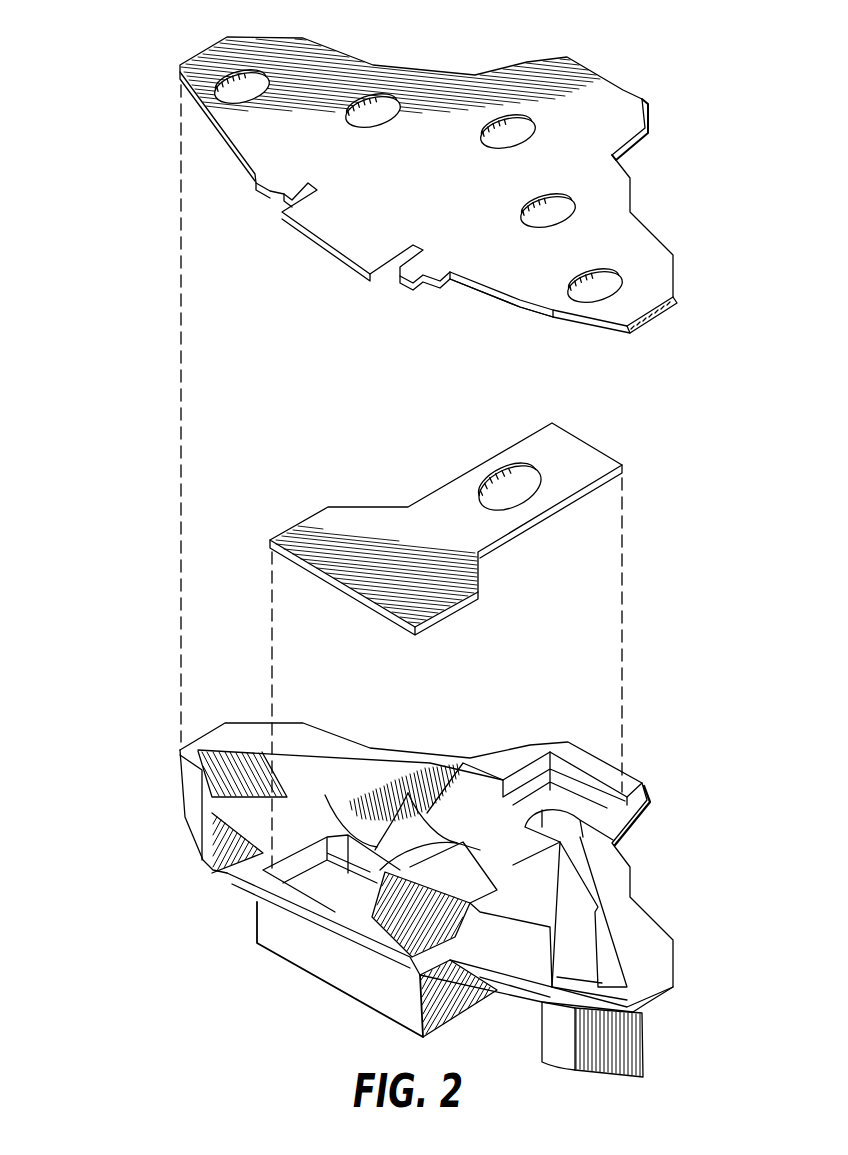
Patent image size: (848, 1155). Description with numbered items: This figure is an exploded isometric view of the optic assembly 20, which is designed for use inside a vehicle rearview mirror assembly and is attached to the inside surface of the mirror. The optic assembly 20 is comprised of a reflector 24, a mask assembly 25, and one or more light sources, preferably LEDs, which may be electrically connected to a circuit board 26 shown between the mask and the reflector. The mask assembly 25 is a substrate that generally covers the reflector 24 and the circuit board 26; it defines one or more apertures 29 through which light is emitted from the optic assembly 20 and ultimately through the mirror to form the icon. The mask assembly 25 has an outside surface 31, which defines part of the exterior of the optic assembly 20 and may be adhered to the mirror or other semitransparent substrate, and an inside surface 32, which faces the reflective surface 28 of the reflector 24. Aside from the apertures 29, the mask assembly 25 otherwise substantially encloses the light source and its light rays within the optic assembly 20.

The optic assembly 20 is at (143, 257).
The reflector 24 is at (478, 900).
The mask assembly 25 is at (481, 192).
The circuit board 26 is at (442, 507).
The reflective surface 28 is at (598, 927).
The apertures 29 is at (257, 90).
The outside surface 31 is at (447, 137).
The inside surface 32 is at (490, 300).